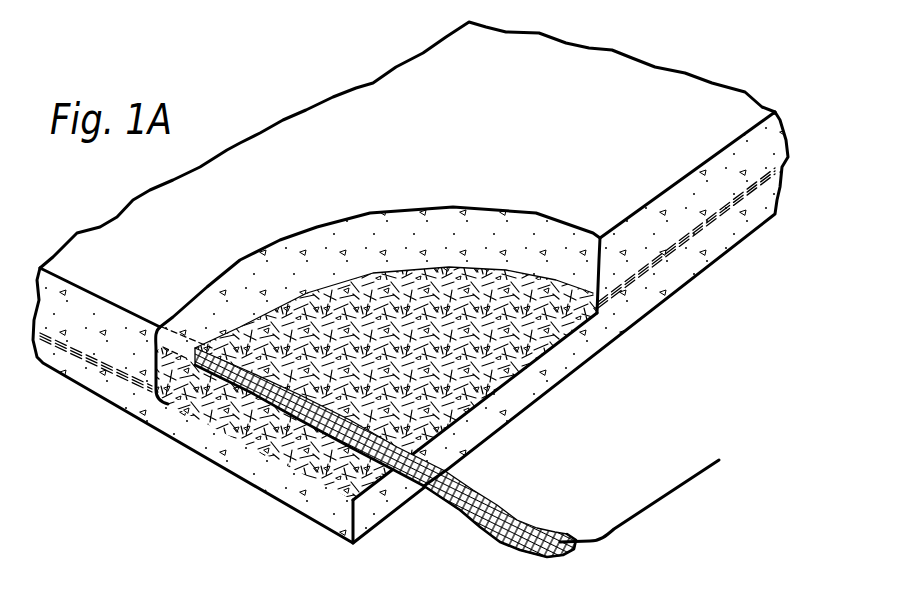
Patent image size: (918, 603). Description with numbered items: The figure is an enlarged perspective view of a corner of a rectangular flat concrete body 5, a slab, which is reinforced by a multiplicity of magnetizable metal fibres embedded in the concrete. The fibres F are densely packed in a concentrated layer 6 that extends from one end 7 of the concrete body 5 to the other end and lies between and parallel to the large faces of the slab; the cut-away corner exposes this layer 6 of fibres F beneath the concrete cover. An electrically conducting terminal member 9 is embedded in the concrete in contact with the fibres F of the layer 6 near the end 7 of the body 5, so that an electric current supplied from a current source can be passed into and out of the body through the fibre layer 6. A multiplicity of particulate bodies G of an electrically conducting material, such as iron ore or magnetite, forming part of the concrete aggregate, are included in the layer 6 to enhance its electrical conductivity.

The concrete body 5 is at (645, 77).
The concentrated layer 6 is at (102, 375).
The end of the concrete body 7 is at (258, 482).
The terminal member 9 is at (474, 518).
The fibres F is at (412, 418).
The particulate bodies G is at (505, 340).